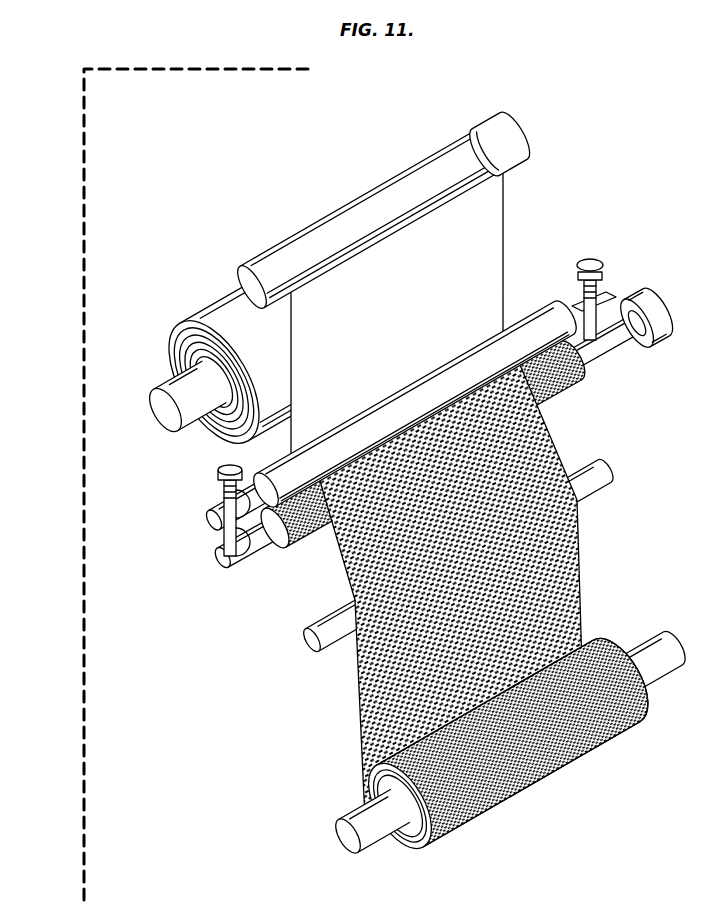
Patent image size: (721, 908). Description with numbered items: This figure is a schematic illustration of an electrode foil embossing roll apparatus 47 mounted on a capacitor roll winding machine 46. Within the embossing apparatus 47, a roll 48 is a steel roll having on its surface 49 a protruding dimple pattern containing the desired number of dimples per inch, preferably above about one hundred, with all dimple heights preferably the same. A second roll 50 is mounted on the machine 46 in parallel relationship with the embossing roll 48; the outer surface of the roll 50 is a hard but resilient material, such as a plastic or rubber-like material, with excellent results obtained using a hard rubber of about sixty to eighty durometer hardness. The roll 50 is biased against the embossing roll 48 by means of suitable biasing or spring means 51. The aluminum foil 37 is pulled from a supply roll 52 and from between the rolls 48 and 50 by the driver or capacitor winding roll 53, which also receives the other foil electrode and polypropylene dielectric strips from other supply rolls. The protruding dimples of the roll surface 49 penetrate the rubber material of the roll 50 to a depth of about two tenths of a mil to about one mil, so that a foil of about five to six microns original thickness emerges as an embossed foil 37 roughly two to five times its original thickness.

The aluminum foil 37 is at (493, 223).
The capacitor roll winding machine 46 is at (82, 236).
The embossing apparatus 47 is at (297, 205).
The embossing roll 48 is at (566, 378).
The surface of the steel roll 49 is at (300, 540).
The second roll 50 is at (547, 313).
The biasing or spring means 51 is at (218, 496).
The supply roll 52 is at (173, 334).
The capacitor winding roll 53 is at (413, 838).